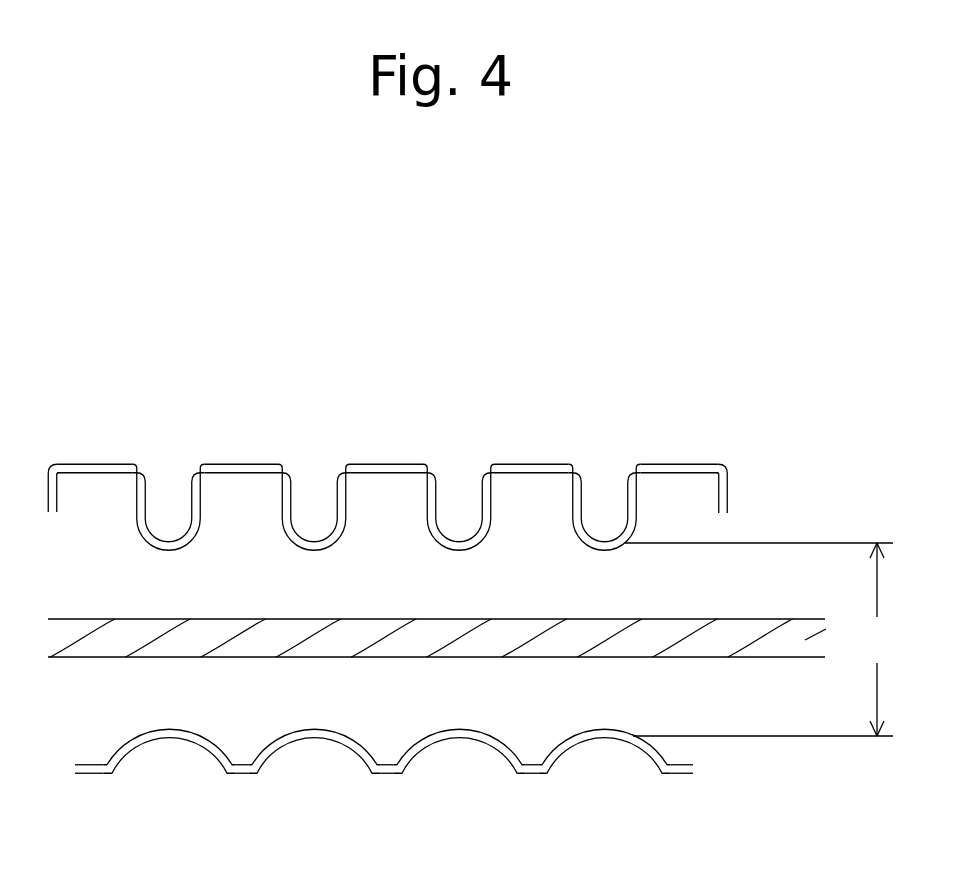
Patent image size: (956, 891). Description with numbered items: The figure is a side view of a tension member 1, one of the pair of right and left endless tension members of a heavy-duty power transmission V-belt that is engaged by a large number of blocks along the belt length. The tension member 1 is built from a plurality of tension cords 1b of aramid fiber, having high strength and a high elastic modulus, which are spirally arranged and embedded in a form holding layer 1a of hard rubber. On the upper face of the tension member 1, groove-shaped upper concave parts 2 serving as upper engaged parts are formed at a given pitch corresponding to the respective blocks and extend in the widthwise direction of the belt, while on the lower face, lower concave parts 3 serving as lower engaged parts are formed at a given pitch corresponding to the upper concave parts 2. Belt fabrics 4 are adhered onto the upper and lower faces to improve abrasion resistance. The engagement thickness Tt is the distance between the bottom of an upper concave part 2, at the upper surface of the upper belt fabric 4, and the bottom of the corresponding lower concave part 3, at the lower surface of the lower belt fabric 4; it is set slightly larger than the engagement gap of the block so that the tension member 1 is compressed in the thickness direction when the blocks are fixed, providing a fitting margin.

The tension member 1 is at (87, 256).
The form holding layer 1a is at (530, 513).
The tension cords 1b is at (458, 652).
The upper concave part 2 is at (165, 540).
The lower concave part 3 is at (165, 739).
The belt fabric 4 is at (387, 471).
The engagement thickness Tt is at (759, 639).